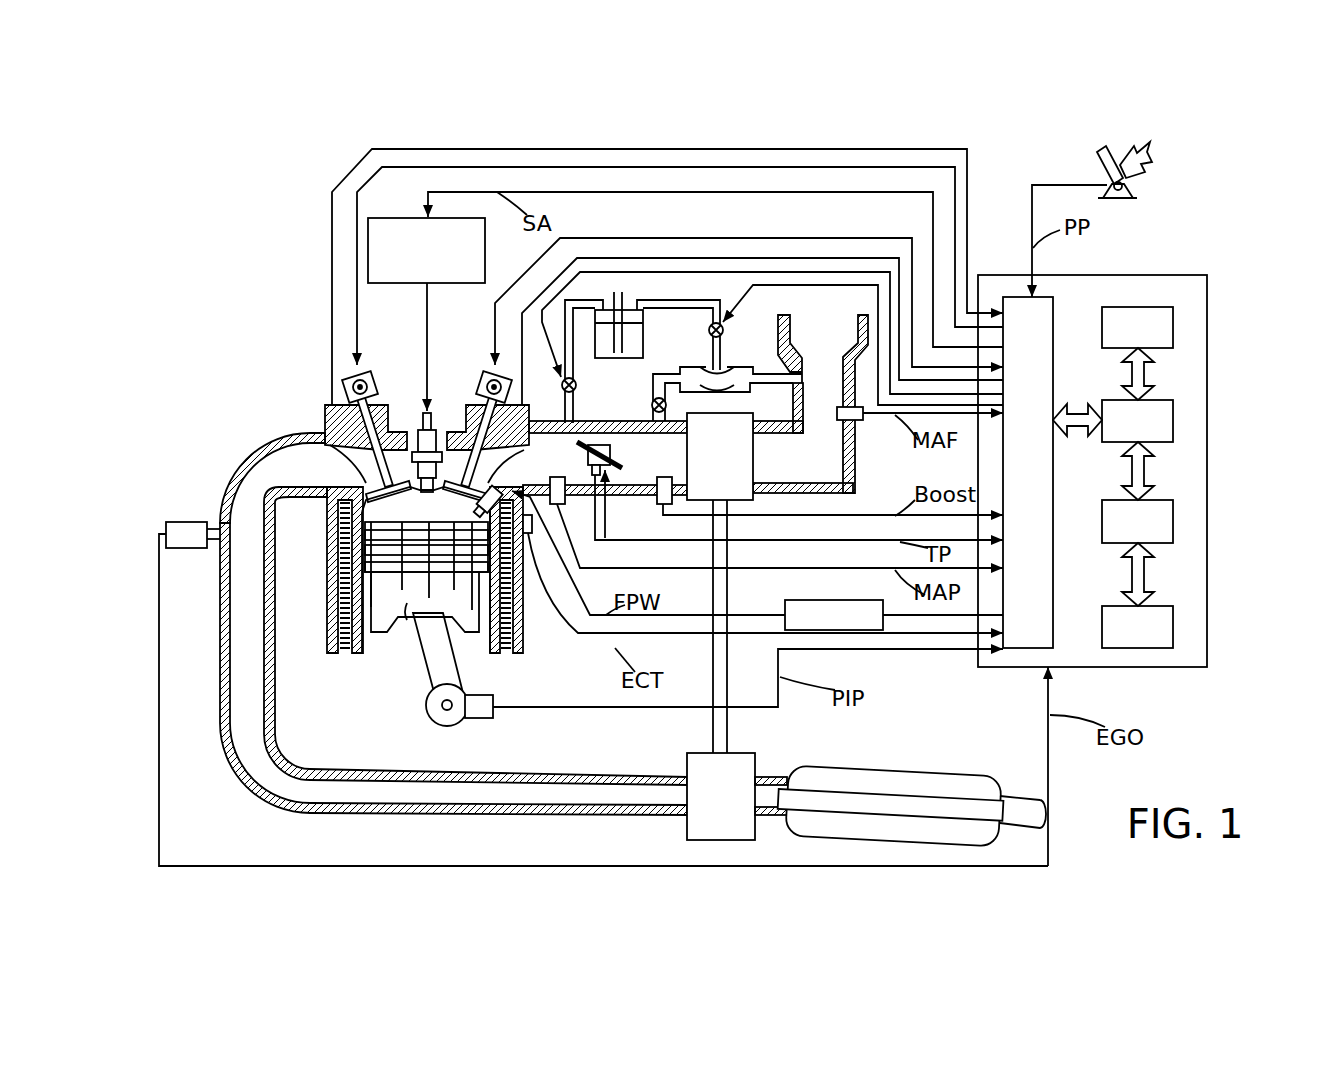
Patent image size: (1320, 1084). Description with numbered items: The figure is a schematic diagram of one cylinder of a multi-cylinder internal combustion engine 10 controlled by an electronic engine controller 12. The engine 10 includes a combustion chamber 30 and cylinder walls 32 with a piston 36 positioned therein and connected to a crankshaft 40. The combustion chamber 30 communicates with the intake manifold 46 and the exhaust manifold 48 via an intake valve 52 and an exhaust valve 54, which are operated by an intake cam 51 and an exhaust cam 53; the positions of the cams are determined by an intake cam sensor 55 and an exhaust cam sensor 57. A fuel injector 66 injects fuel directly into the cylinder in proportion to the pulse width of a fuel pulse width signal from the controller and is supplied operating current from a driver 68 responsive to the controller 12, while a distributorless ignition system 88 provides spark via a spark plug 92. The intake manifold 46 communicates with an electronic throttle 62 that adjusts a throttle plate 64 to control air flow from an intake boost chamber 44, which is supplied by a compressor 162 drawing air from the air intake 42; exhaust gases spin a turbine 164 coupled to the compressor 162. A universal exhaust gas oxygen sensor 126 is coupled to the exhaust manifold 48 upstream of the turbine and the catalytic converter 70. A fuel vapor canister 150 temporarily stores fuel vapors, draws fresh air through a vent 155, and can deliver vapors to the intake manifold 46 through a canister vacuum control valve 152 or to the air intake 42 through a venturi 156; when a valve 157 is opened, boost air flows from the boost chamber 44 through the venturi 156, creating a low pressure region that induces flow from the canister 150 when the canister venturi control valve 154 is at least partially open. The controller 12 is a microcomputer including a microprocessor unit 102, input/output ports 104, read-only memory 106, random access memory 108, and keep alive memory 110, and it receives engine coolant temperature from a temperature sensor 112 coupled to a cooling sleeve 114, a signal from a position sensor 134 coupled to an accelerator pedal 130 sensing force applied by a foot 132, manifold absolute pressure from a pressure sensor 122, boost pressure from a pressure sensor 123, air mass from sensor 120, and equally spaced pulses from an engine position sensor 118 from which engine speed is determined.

The internal combustion engine 10 is at (262, 360).
The electronic engine controller 12 is at (1195, 275).
The combustion chamber 30 is at (423, 503).
The cylinder walls 32 is at (436, 602).
The piston 36 is at (405, 650).
The crankshaft 40 is at (437, 725).
The air intake 42 is at (808, 467).
The intake boost chamber 44 is at (640, 467).
The intake manifold 46 is at (540, 469).
The exhaust manifold 48 is at (283, 477).
The intake cam 51 is at (485, 373).
The intake valve 52 is at (468, 440).
The exhaust cam 53 is at (369, 374).
The exhaust valve 54 is at (362, 478).
The intake cam sensor 55 is at (513, 387).
The exhaust cam sensor 57 is at (340, 384).
The electronic throttle 62 is at (605, 445).
The throttle plate 64 is at (589, 445).
The fuel injector 66 is at (492, 495).
The driver 68 is at (812, 600).
The catalytic converter 70 is at (960, 773).
The distributorless ignition system 88 is at (385, 218).
The spark plug 92 is at (421, 430).
The microprocessor unit 102 is at (1175, 420).
The input/output ports 104 is at (1060, 302).
The read-only memory 106 is at (1175, 325).
The random access memory 108 is at (1175, 520).
The keep alive memory 110 is at (1175, 622).
The temperature sensor 112 is at (545, 640).
The cooling sleeve 114 is at (515, 645).
The engine position sensor 118 is at (480, 720).
The air mass sensor 120 is at (852, 420).
The pressure sensor 122 is at (560, 506).
The pressure sensor 123 is at (660, 499).
The Universal Exhaust Gas Oxygen (UEGO) sensor 126 is at (166, 530).
The accelerator pedal 130 is at (1152, 165).
The foot 132 is at (1152, 142).
The position sensor 134 is at (1135, 185).
The fuel vapor canister 150 is at (645, 352).
The canister vacuum control valve 152 is at (578, 382).
The canister venturi control valve 154 is at (724, 335).
The vent 155 is at (628, 293).
The venturi 156 is at (735, 392).
The valve 157 is at (668, 405).
The compressor 162 is at (703, 467).
The turbine 164 is at (687, 832).